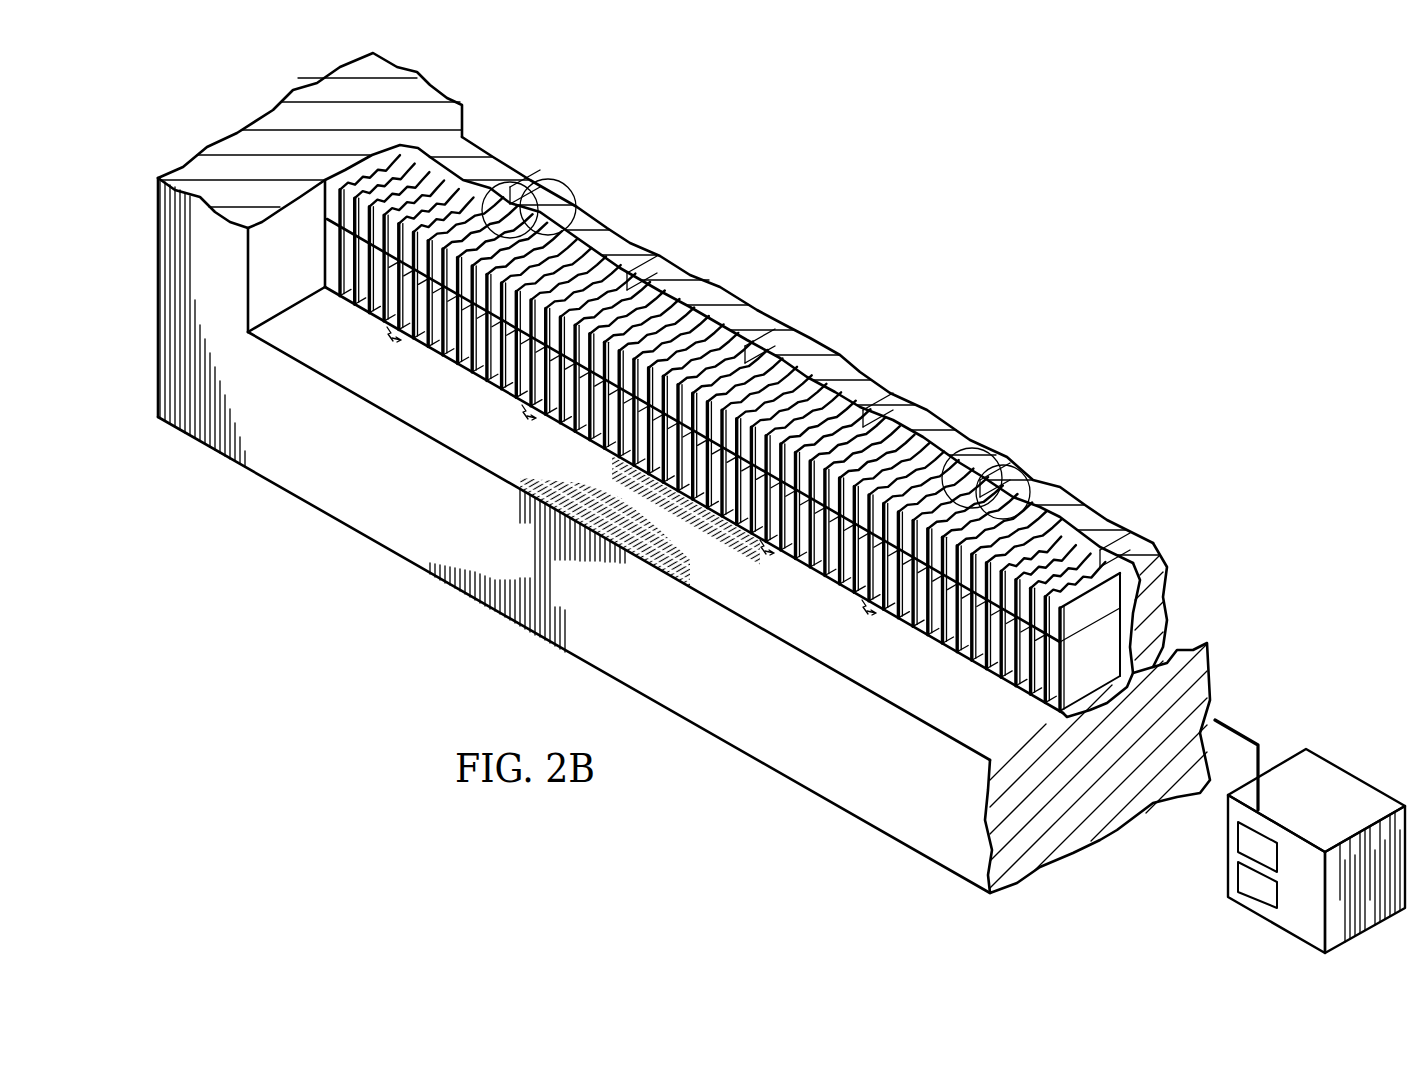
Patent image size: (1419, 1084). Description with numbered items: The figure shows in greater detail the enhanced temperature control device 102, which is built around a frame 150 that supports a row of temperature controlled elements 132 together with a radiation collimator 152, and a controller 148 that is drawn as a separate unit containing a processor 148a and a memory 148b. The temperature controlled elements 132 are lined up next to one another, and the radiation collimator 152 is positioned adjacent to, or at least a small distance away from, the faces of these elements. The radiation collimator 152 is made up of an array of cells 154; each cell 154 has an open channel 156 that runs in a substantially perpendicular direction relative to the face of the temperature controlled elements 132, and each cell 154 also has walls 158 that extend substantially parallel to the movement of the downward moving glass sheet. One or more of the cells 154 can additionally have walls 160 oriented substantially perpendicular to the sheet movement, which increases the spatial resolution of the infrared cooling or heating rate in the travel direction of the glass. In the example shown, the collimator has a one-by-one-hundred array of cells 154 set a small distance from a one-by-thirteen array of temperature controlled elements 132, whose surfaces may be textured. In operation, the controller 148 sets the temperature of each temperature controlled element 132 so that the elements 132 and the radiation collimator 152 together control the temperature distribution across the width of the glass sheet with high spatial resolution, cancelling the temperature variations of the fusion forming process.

The enhanced temperature control device 102 is at (886, 216).
The temperature controlled elements 132 is at (465, 140).
The controller 148 is at (1355, 775).
The processor 148a is at (1240, 838).
The memory 148b is at (1240, 880).
The frame 150 is at (170, 295).
The radiation collimator 152 is at (836, 408).
The cells 154 is at (611, 482).
The open channel 156 is at (446, 358).
The walls 158 is at (494, 183).
The walls 160 is at (325, 205).